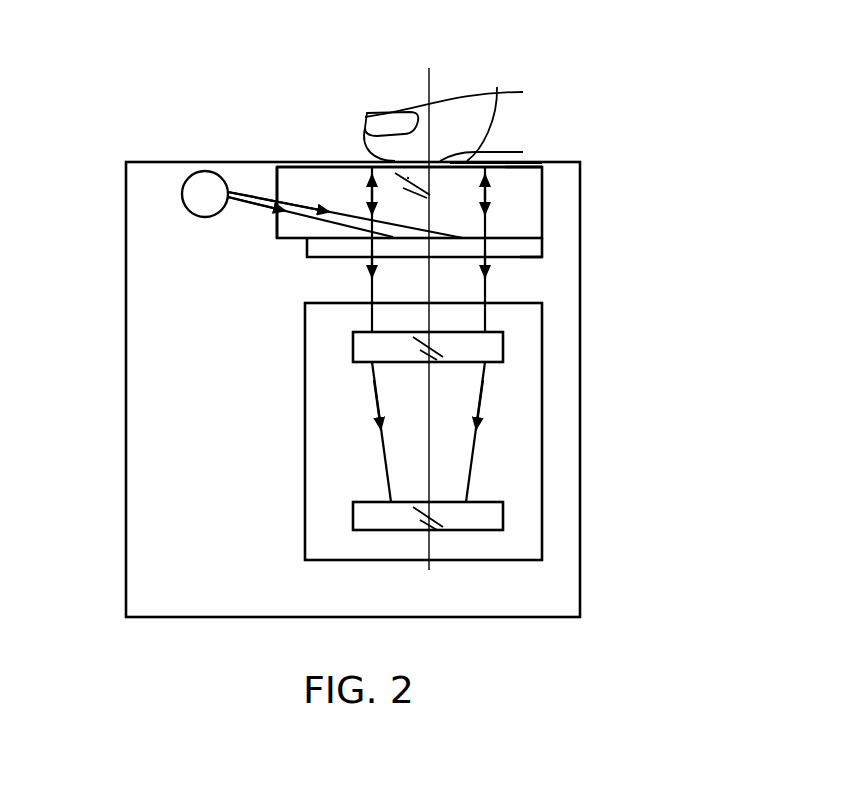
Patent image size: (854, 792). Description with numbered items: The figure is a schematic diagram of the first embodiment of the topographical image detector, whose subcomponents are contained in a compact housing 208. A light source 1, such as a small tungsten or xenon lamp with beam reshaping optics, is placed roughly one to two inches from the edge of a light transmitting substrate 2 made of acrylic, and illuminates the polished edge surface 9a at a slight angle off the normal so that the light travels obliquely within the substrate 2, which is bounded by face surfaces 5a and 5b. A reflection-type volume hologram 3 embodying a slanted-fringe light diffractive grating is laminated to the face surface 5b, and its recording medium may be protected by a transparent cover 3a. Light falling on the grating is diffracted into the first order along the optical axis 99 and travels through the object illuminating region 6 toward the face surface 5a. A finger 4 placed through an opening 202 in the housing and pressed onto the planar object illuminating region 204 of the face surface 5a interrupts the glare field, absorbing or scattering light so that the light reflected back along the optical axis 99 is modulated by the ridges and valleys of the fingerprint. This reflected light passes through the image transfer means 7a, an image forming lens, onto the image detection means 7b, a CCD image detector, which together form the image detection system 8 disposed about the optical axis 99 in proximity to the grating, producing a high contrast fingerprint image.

The light source 1 is at (193, 183).
The light transmitting substrate 2 is at (409, 202).
The reflection-type volume hologram 3 is at (352, 257).
The cover 3a is at (515, 260).
The finger 4 is at (390, 125).
The face surface 5a is at (349, 164).
The face surface 5b is at (297, 239).
The object illuminating region 6 is at (430, 195).
The image transfer means 7a is at (353, 341).
The image detection means 7b is at (353, 520).
The image detection system 8 is at (305, 436).
The edge surface 9a is at (277, 181).
The optical axis 99 is at (428, 86).
The opening 202 is at (470, 160).
The planar object illuminating region 204 is at (505, 170).
The compact housing 208 is at (126, 236).